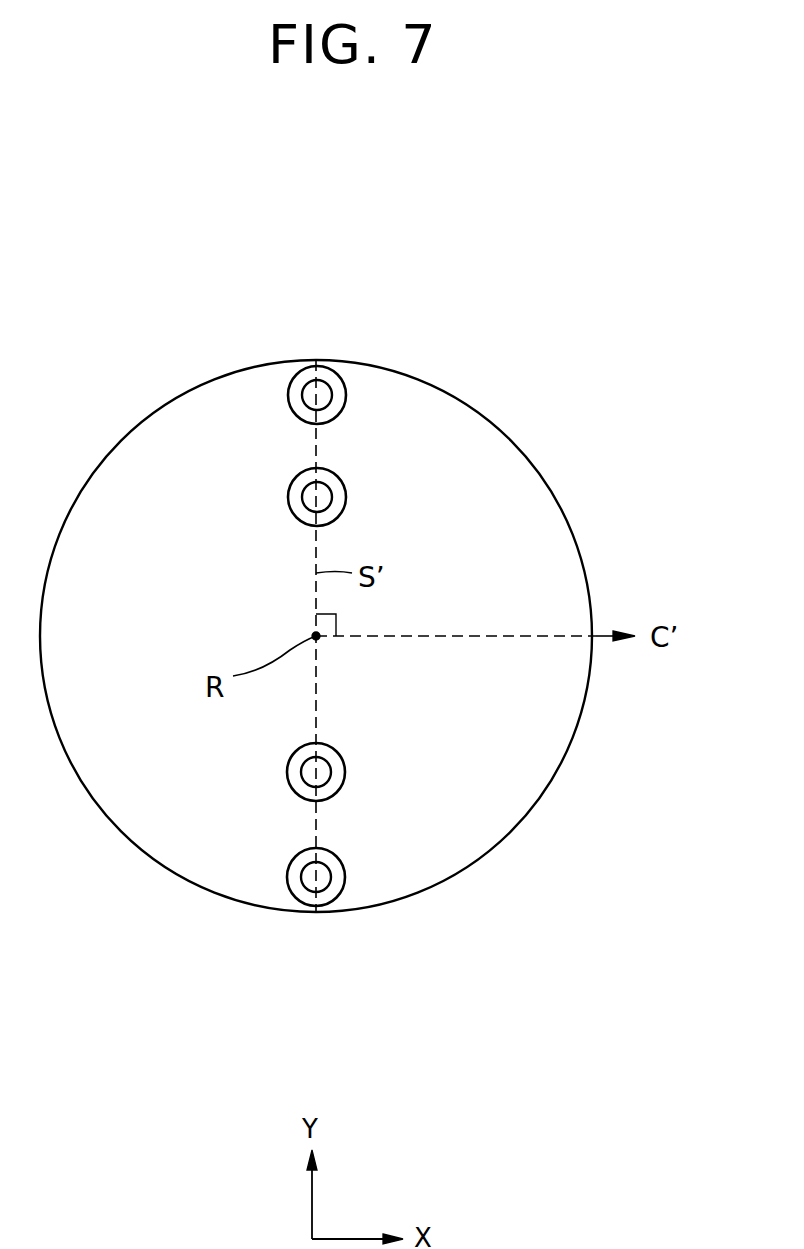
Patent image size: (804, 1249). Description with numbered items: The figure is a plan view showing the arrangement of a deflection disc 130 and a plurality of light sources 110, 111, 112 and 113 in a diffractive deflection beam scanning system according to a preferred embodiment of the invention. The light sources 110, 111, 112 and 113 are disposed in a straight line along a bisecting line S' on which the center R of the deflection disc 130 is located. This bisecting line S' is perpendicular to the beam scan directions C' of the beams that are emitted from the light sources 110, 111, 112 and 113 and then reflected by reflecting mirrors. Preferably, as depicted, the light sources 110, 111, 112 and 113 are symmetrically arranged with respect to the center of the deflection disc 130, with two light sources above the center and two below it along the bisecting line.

The light source 110 is at (327, 378).
The light source 111 is at (335, 487).
The light source 112 is at (335, 773).
The light source 113 is at (335, 874).
The deflection disc 130 is at (140, 447).